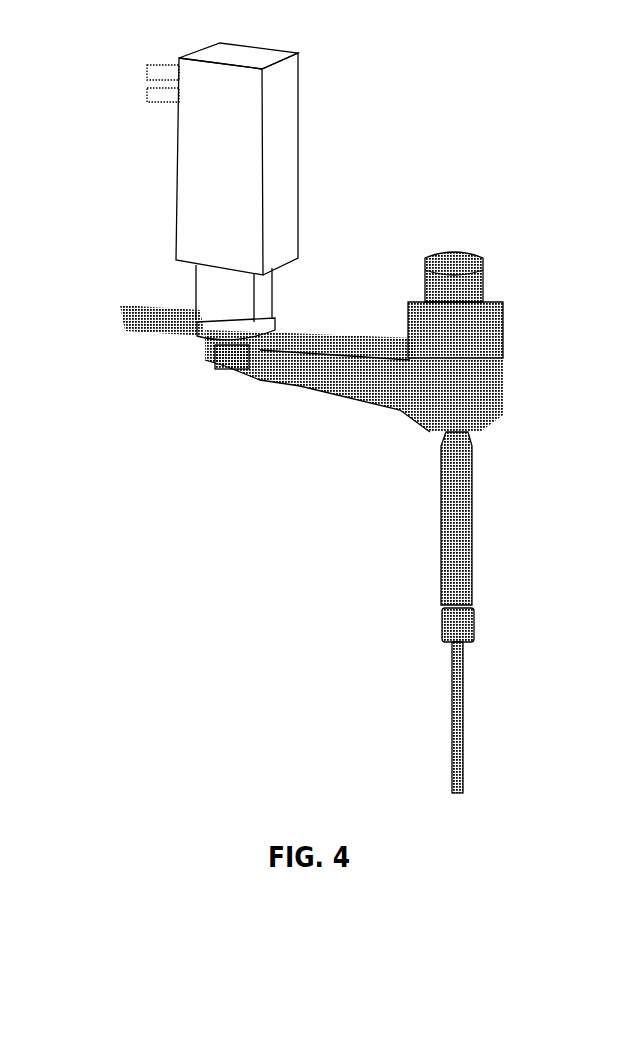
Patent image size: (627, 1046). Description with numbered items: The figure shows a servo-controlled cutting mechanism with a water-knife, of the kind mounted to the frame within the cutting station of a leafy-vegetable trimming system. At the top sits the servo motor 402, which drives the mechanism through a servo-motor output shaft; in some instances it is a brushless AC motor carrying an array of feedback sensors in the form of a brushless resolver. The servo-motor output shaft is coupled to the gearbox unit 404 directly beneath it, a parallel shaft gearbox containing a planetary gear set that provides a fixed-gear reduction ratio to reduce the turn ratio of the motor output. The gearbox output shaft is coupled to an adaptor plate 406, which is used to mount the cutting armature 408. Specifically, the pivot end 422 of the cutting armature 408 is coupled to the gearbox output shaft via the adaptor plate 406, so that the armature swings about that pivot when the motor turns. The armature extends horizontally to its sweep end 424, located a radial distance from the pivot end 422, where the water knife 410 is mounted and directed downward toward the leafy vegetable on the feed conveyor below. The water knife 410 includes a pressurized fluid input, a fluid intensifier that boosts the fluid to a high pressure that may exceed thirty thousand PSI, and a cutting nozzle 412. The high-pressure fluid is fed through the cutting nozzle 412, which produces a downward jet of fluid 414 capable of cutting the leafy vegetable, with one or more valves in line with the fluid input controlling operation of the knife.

The servo motor 402 is at (176, 150).
The gearbox unit 404 is at (196, 298).
The adaptor plate 406 is at (203, 345).
The cutting armature 408 is at (310, 362).
The pivot end 422 is at (227, 357).
The sweep end 424 is at (453, 365).
The water knife 410 is at (472, 525).
The cutting nozzle 412 is at (474, 630).
The jet of fluid 414 is at (463, 728).